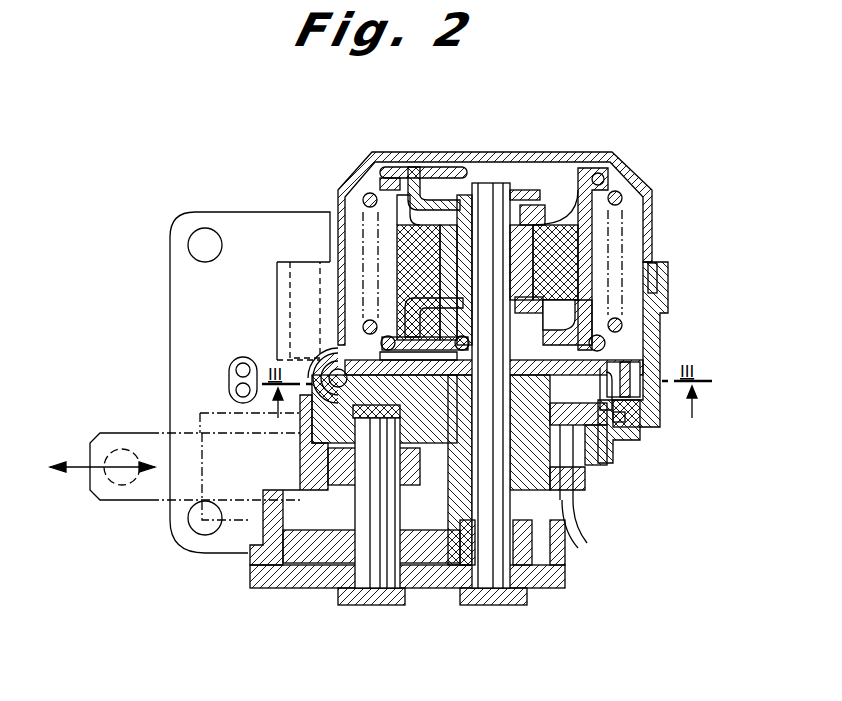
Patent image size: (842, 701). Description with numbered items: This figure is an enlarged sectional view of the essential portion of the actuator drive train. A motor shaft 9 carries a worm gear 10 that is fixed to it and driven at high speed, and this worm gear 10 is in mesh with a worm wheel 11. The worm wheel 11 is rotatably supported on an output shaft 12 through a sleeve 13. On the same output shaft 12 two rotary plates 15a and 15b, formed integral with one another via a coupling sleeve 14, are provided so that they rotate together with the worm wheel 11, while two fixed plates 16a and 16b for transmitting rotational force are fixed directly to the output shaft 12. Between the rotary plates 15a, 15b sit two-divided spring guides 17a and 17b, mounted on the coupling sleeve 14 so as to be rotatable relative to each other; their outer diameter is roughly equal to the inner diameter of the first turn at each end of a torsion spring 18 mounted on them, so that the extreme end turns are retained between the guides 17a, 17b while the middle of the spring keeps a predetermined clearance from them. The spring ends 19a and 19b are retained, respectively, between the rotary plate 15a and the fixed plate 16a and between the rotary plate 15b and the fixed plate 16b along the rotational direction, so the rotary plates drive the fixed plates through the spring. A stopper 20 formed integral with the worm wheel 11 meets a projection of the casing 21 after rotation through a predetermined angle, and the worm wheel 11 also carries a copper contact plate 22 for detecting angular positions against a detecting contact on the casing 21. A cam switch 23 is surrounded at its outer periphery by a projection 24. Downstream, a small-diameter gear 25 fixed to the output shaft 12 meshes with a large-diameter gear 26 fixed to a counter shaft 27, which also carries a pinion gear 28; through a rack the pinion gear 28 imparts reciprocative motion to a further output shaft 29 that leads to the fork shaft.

The motor shaft 9 is at (332, 352).
The worm gear 10 is at (330, 366).
The worm wheel 11 is at (650, 362).
The output shaft 12 is at (462, 568).
The sleeve 13 is at (580, 505).
The coupling sleeve 14 is at (525, 212).
The rotary plate 15a is at (428, 190).
The rotary plate 15b is at (455, 327).
The fixed plate 16a is at (438, 168).
The fixed plate 16b is at (414, 312).
The spring guide 17a is at (586, 224).
The spring guide 17b is at (592, 300).
The torsion spring 18 is at (645, 202).
The spring end 19a is at (472, 345).
The spring end 19b is at (462, 178).
The stopper 20 is at (658, 427).
The casing 21 is at (622, 400).
The copper contact plate 22 is at (613, 364).
The cam switch 23 is at (565, 438).
The projection 24 is at (388, 408).
The small-diameter gear 25 is at (528, 562).
The large-diameter gear 26 is at (310, 556).
The counter shaft 27 is at (375, 552).
The pinion gear 28 is at (330, 465).
The output shaft 29 is at (118, 500).